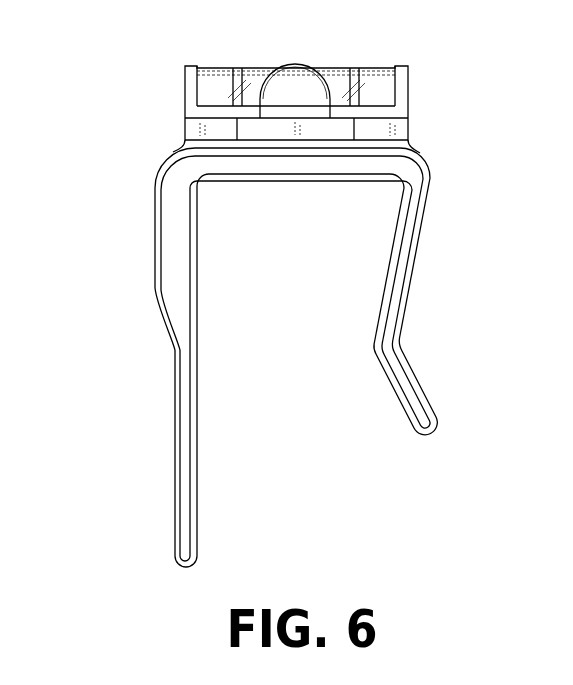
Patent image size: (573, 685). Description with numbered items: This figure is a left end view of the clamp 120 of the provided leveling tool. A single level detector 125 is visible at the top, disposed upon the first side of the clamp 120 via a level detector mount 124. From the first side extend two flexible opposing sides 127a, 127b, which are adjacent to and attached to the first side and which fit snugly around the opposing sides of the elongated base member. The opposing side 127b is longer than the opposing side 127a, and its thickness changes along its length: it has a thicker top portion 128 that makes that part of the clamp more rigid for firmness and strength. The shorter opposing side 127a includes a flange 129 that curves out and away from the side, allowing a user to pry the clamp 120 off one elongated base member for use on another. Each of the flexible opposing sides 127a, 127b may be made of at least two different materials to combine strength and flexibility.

The clamp 120 is at (127, 360).
The level detector mount 124 is at (408, 126).
The level detector 125 is at (358, 66).
The flexible opposing side 127a is at (418, 254).
The flexible opposing side 127b is at (175, 467).
The thicker top portion 128 is at (175, 227).
The flange 129 is at (436, 415).